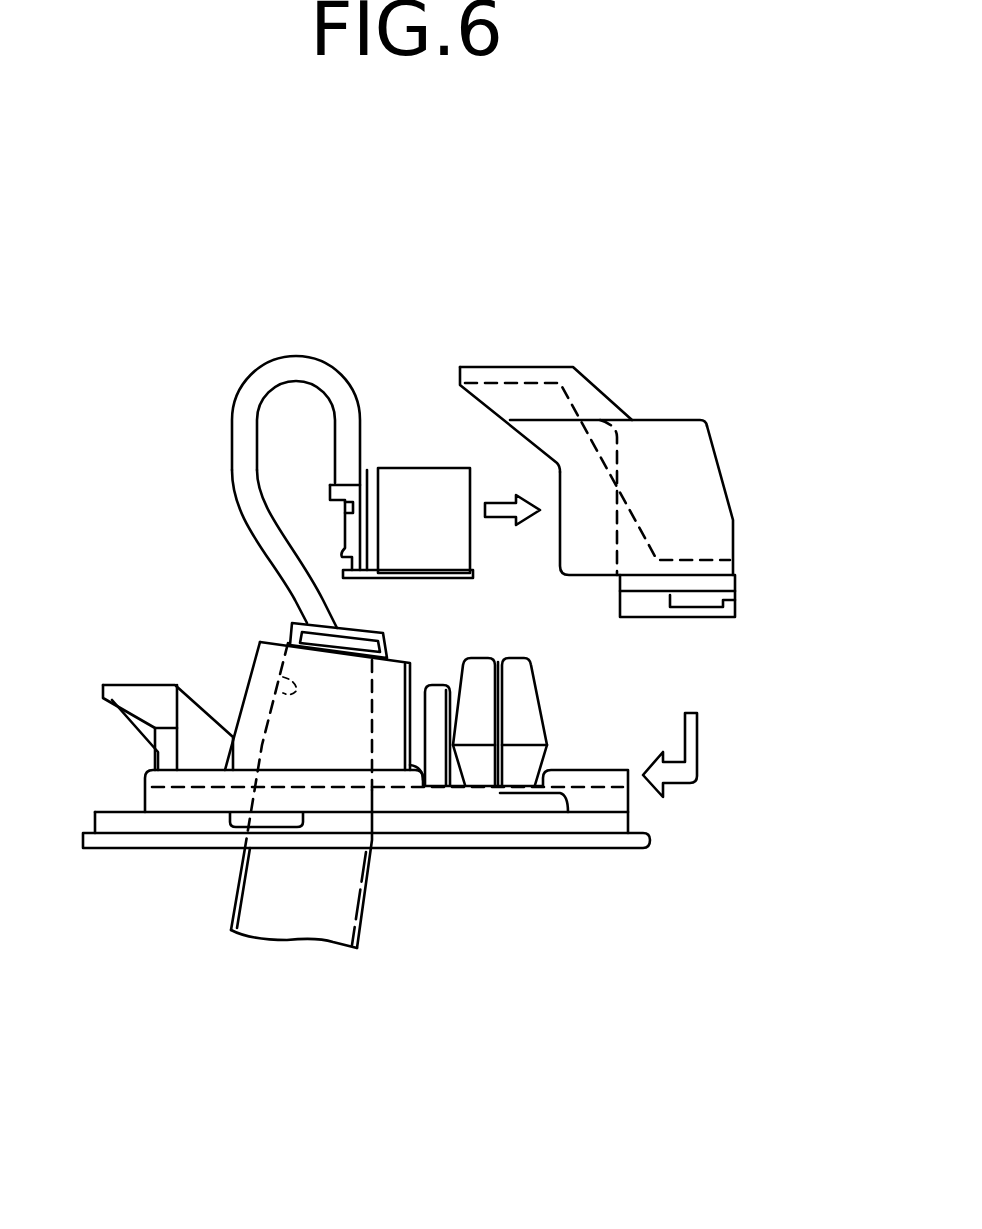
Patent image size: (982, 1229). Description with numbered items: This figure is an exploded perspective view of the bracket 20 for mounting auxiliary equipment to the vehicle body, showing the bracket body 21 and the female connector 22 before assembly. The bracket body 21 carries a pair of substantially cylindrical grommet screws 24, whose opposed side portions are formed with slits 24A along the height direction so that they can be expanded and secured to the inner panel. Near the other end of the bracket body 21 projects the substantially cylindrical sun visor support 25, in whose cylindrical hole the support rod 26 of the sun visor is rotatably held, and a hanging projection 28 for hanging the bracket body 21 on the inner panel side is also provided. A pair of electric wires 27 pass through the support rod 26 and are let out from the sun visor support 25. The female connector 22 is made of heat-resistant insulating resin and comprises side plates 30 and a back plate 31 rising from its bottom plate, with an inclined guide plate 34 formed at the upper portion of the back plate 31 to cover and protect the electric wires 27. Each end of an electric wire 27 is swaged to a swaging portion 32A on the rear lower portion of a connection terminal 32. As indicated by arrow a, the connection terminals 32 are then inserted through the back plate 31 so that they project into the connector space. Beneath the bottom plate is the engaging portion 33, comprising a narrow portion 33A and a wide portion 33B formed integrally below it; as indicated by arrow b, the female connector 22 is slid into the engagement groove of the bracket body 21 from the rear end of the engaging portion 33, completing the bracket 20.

The bracket 20 is at (667, 456).
The bracket body 21 is at (340, 772).
The female connector 22 is at (686, 408).
The grommet screw 24 is at (522, 705).
The slit 24A is at (492, 727).
The sun visor support 25 is at (257, 647).
The support rod 26 is at (300, 912).
The electric wire 27 is at (285, 363).
The hanging projection 28 is at (135, 693).
The side plate 30 is at (718, 457).
The back plate 31 is at (560, 553).
The connection terminal 32 is at (418, 465).
The swaging portion 32A is at (347, 537).
The engaging portion 33 is at (747, 628).
The narrow portion 33A is at (728, 587).
The wide portion 33B is at (653, 607).
The inclined guide plate 34 is at (585, 380).
The arrow a is at (497, 498).
The arrow b is at (700, 733).